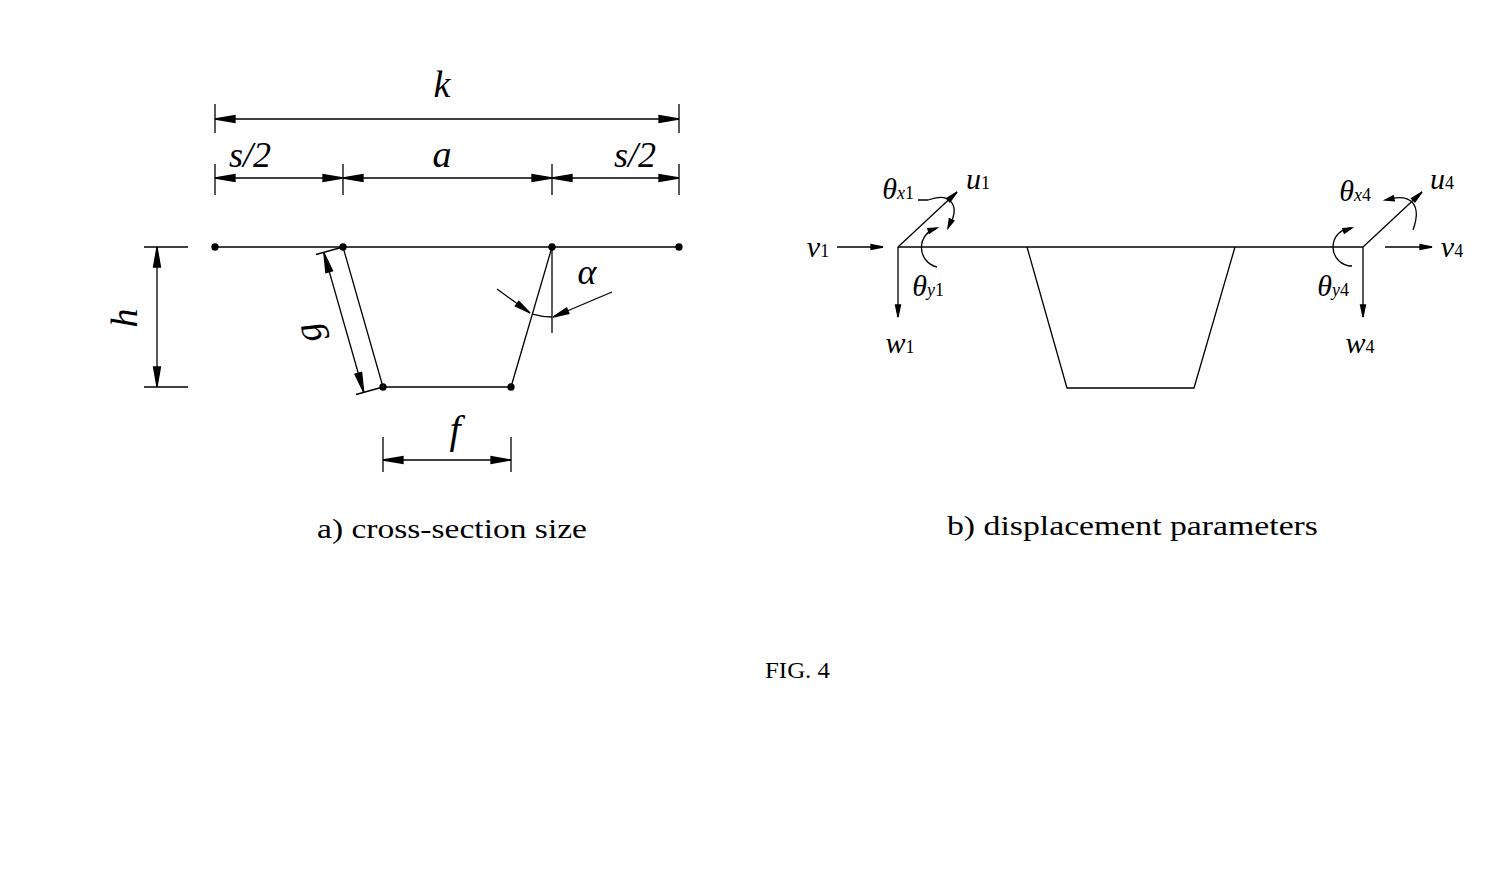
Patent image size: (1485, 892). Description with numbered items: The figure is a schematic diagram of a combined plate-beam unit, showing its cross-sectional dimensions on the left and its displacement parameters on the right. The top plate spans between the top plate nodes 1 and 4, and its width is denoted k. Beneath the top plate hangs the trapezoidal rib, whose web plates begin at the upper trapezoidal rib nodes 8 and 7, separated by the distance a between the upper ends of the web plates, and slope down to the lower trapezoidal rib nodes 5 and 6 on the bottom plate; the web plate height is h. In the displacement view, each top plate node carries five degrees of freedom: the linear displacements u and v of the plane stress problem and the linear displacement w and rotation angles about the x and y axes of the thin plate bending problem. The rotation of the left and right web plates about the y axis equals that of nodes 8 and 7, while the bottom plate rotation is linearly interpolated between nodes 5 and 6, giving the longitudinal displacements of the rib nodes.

The top plate node 1 is at (215, 228).
The top plate node 4 is at (680, 228).
The trapezoidal rib node 5 is at (375, 406).
The trapezoidal rib node 6 is at (517, 406).
The trapezoidal rib node 7 is at (559, 228).
The trapezoidal rib node 8 is at (336, 228).